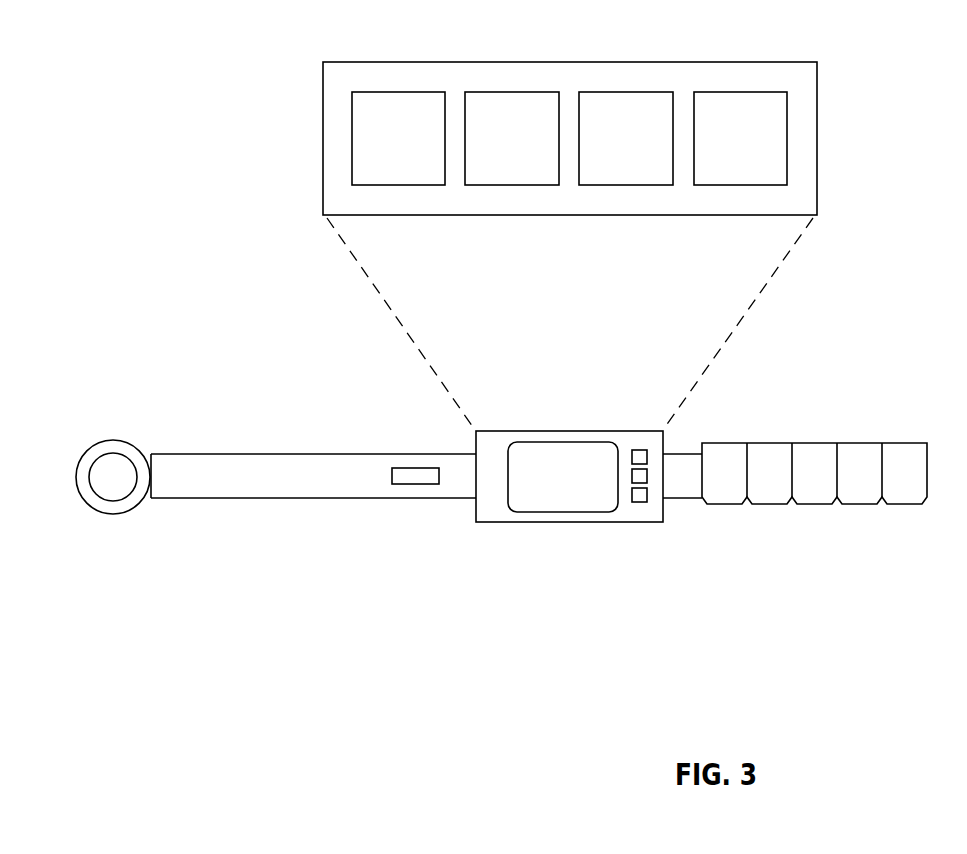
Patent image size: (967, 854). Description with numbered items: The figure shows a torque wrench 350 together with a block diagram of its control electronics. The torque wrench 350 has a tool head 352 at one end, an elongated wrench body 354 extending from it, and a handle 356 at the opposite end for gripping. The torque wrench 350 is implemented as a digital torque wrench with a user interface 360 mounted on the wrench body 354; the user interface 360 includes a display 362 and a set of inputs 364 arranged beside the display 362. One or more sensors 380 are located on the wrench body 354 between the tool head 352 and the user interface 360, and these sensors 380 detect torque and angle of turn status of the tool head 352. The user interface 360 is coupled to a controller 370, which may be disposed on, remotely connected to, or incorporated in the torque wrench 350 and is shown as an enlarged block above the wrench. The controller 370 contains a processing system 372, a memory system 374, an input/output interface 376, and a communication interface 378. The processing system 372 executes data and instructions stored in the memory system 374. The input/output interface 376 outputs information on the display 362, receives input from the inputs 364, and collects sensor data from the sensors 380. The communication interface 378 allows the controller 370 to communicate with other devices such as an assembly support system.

The torque wrench 350 is at (216, 399).
The tool head 352 is at (118, 512).
The wrench body 354 is at (243, 500).
The handle 356 is at (903, 505).
The user interface 360 is at (485, 522).
The display 362 is at (558, 502).
The inputs 364 is at (637, 503).
The controller 370 is at (362, 61).
The processing system 372 is at (420, 152).
The memory system 374 is at (534, 152).
The input/output interface 376 is at (648, 152).
The communication interface 378 is at (762, 152).
The sensors 380 is at (417, 477).